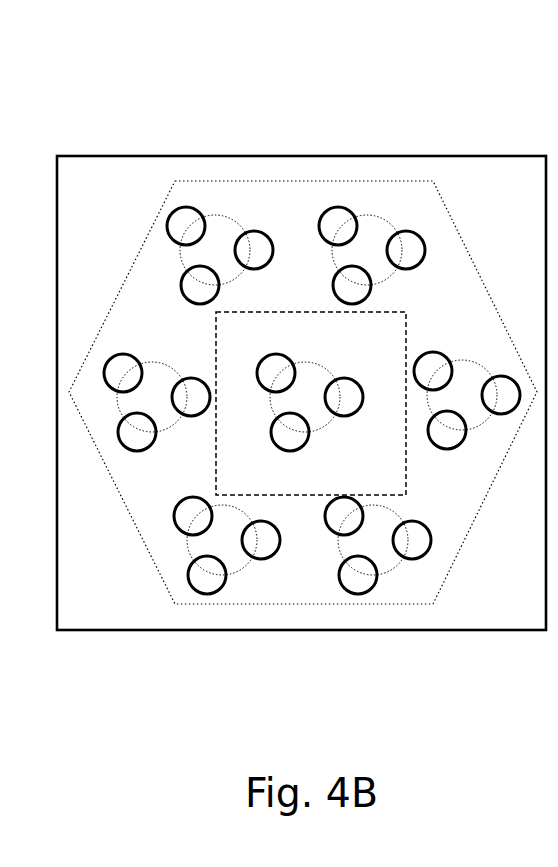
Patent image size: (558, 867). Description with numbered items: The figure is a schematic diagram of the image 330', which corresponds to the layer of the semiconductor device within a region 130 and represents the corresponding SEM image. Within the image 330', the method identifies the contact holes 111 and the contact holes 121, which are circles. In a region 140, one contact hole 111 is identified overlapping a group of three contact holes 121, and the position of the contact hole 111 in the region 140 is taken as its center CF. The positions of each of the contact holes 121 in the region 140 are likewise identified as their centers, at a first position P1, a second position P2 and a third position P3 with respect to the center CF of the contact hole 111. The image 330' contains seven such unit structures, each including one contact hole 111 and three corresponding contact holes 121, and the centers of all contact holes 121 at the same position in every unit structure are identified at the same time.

The image 330' is at (301, 329).
The region 130 is at (453, 222).
The region 140 is at (406, 332).
The contact hole 111 is at (322, 367).
The contact holes 121 is at (263, 359).